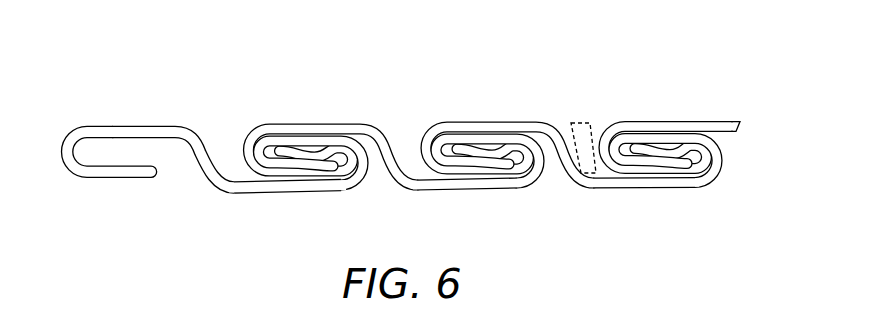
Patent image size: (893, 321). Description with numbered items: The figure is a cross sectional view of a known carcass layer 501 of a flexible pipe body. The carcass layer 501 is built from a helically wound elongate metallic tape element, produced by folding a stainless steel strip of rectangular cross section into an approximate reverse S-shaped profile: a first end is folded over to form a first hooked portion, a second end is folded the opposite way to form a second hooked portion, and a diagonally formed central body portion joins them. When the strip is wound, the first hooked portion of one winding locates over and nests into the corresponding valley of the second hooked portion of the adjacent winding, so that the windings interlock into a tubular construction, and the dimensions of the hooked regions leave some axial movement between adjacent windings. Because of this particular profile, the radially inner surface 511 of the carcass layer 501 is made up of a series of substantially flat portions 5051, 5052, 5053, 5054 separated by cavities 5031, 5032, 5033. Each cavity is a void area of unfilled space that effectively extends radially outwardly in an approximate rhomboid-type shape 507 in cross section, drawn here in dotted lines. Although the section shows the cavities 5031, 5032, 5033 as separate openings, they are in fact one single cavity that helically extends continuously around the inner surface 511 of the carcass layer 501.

The carcass layer 501 is at (408, 138).
The radially inner surface 511 is at (87, 123).
The substantially flat portion 5051 is at (140, 127).
The substantially flat portion 5052 is at (320, 124).
The substantially flat portion 5053 is at (499, 122).
The substantially flat portion 5054 is at (677, 121).
The cavity 5031 is at (230, 170).
The cavity 5032 is at (408, 168).
The cavity 5033 is at (631, 199).
The rhomboid-type shape 507 is at (586, 118).